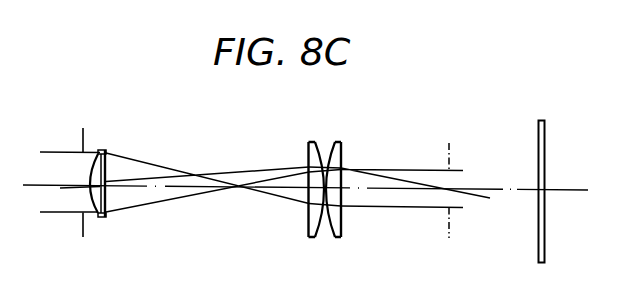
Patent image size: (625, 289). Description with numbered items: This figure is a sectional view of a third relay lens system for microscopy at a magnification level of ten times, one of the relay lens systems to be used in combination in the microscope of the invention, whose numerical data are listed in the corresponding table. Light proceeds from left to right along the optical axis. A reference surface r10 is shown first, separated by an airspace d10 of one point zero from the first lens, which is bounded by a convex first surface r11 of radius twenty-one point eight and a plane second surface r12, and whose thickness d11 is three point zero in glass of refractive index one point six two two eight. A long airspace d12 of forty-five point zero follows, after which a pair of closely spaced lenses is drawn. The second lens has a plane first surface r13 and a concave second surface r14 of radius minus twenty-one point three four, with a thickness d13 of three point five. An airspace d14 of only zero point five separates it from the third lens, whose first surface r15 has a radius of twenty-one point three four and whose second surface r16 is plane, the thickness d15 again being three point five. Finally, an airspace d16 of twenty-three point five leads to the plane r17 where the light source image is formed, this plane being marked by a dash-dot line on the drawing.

The airspace d10 is at (100, 182).
The lens thickness d11 is at (101, 151).
The airspace d12 is at (207, 182).
The lens thickness d13 is at (290, 195).
The airspace d14 is at (325, 176).
The lens thickness d15 is at (354, 195).
The airspace d16 is at (399, 185).
The surface r10 is at (82, 229).
The lens surface r11 is at (93, 209).
The lens surface r12 is at (106, 208).
The lens surface r13 is at (308, 212).
The lens surface r14 is at (317, 229).
The lens surface r15 is at (334, 229).
The lens surface r16 is at (343, 224).
The light source image plane r17 is at (448, 231).